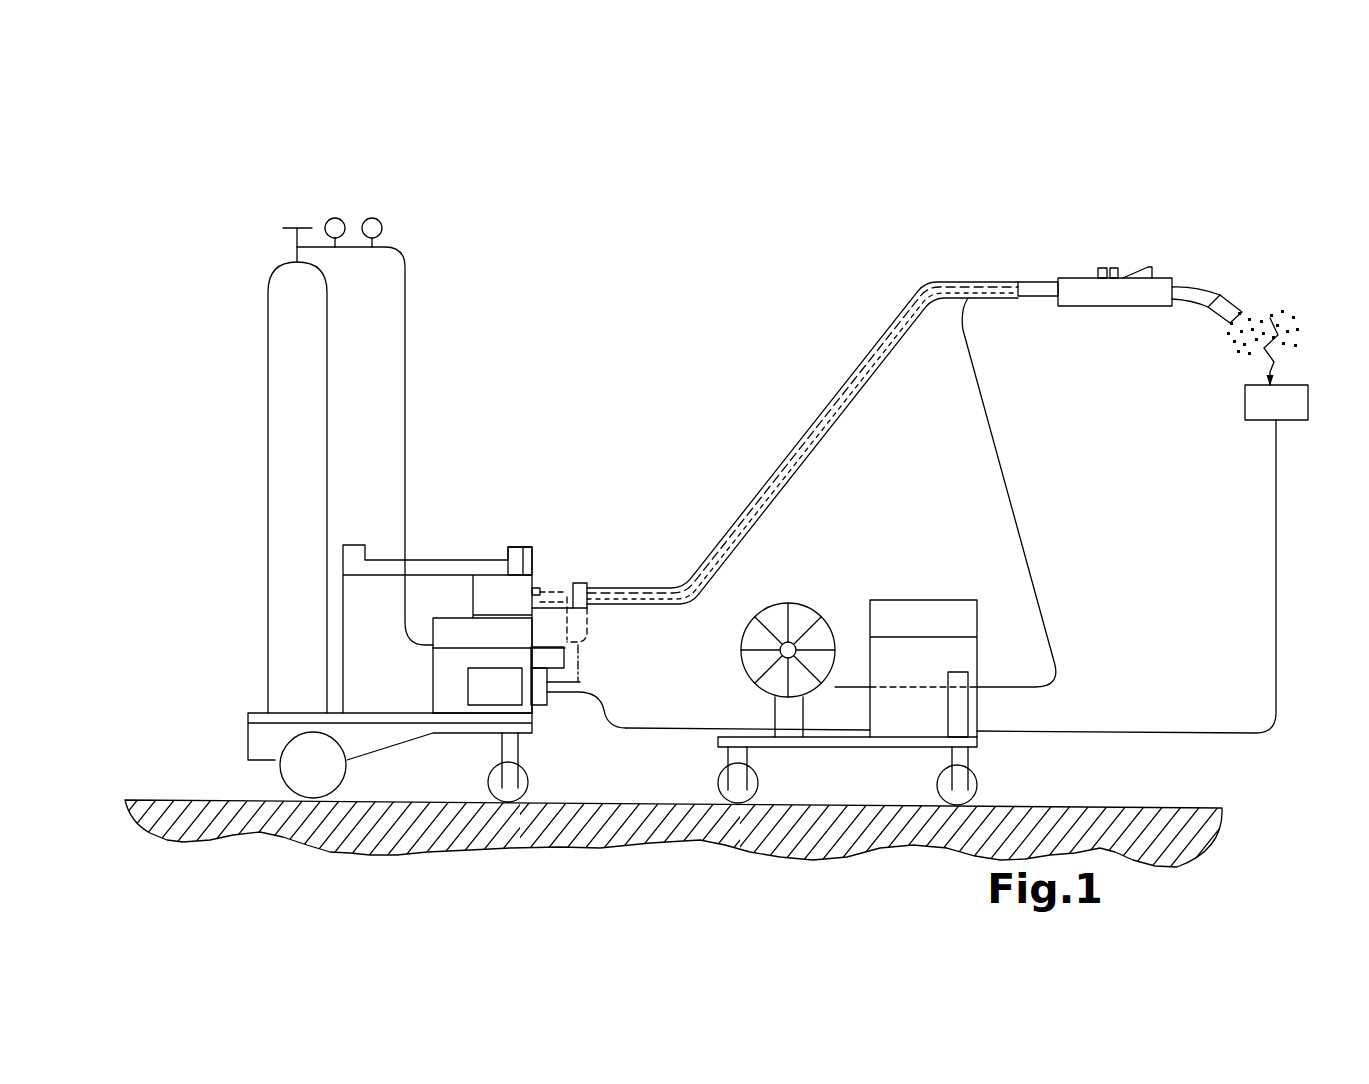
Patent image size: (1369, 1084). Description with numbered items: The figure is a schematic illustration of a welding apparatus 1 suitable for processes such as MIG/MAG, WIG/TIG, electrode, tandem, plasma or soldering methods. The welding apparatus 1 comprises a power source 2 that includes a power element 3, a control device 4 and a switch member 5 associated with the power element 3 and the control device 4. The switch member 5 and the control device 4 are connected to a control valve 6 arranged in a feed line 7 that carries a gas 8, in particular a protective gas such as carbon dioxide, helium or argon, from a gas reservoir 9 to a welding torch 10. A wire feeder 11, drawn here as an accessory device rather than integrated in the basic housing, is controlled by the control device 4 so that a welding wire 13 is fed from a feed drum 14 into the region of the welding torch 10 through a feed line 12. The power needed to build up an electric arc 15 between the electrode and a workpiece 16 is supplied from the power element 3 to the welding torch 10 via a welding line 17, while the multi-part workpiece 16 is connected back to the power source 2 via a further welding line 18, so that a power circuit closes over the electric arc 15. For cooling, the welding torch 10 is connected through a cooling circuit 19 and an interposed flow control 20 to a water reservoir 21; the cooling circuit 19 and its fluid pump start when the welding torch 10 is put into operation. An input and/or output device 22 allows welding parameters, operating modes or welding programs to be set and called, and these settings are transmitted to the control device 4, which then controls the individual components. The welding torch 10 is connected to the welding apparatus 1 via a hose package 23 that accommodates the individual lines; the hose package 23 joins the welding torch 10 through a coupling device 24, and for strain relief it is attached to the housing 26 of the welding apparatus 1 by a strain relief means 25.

The welding apparatus 1 is at (197, 213).
The power source 2 is at (485, 433).
The power element 3 is at (488, 693).
The control device 4 is at (433, 678).
The switch member 5 is at (550, 725).
The control valve 6 is at (545, 663).
The feed line 7 is at (950, 301).
The gas 8 is at (1247, 292).
The gas reservoir 9 is at (297, 340).
The welding torch 10 is at (1162, 250).
The wire feeder 11 is at (1027, 773).
The feed line 12 is at (1020, 520).
The welding wire 13 is at (1263, 311).
The feed drum 14 is at (799, 620).
The electric arc 15 is at (1245, 371).
The workpiece 16 is at (1283, 403).
The welding line 17 is at (875, 341).
The further welding line 18 is at (1278, 600).
The cooling circuit 19 is at (738, 519).
The flow control 20 is at (543, 587).
The water reservoir 21 is at (493, 587).
The input and/or output device 22 is at (528, 557).
The hose package 23 is at (640, 590).
The coupling device 24 is at (1045, 290).
The strain relief means 25 is at (583, 583).
The housing 26 is at (582, 618).